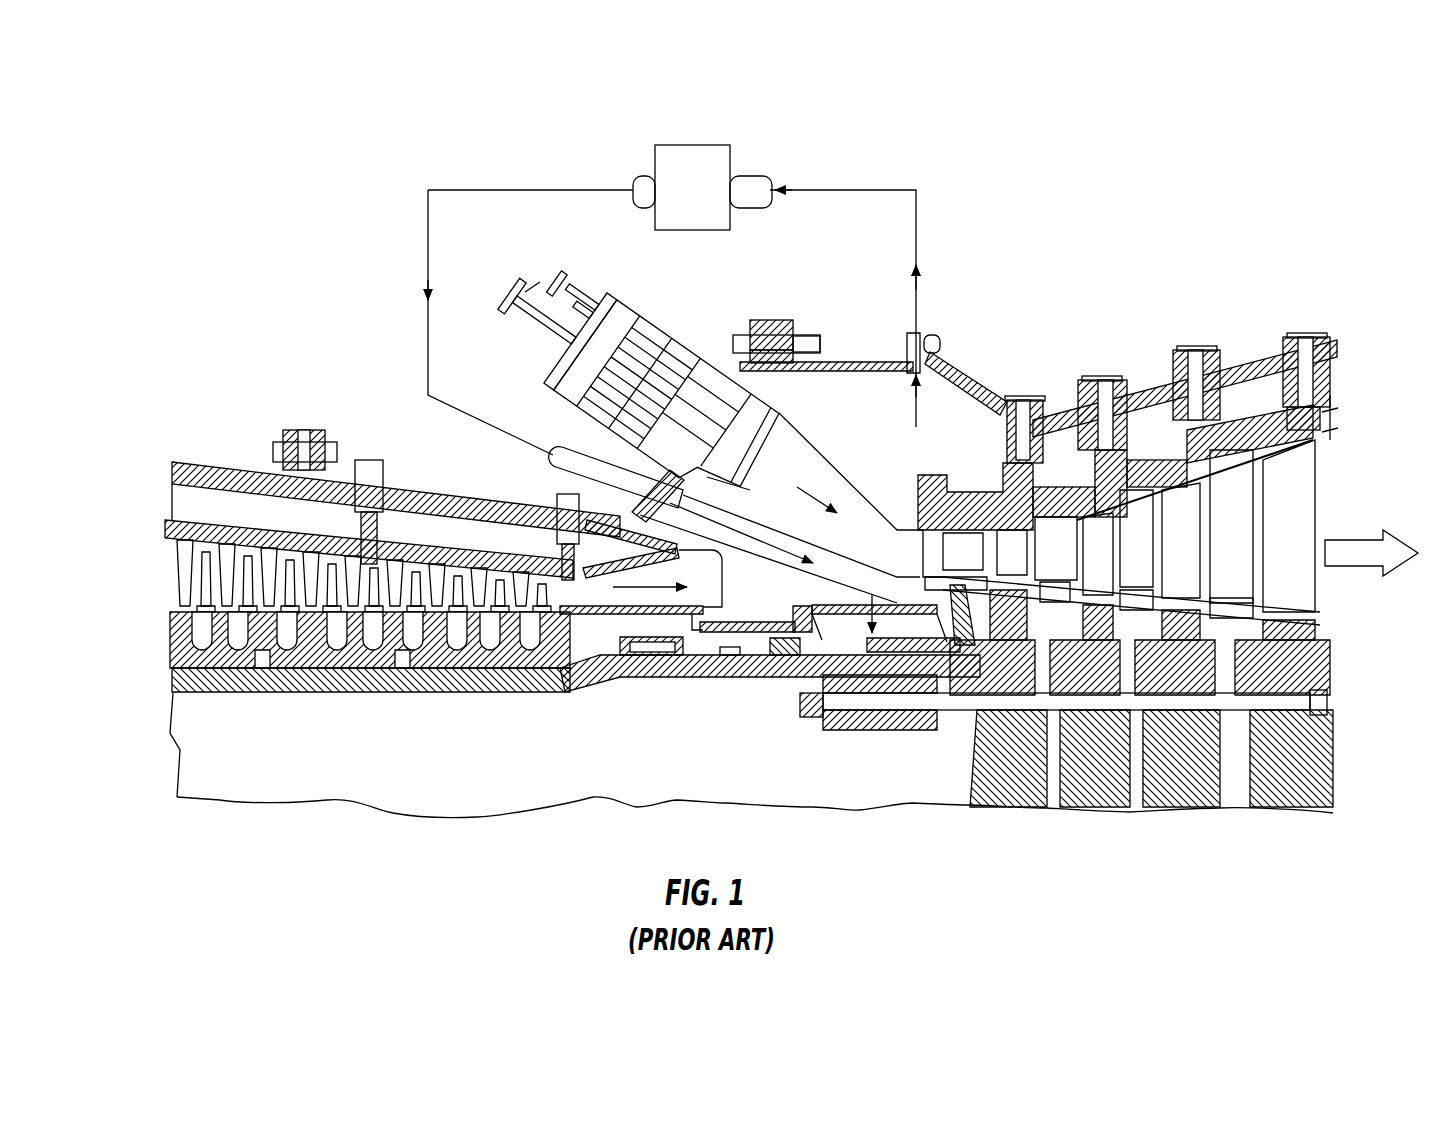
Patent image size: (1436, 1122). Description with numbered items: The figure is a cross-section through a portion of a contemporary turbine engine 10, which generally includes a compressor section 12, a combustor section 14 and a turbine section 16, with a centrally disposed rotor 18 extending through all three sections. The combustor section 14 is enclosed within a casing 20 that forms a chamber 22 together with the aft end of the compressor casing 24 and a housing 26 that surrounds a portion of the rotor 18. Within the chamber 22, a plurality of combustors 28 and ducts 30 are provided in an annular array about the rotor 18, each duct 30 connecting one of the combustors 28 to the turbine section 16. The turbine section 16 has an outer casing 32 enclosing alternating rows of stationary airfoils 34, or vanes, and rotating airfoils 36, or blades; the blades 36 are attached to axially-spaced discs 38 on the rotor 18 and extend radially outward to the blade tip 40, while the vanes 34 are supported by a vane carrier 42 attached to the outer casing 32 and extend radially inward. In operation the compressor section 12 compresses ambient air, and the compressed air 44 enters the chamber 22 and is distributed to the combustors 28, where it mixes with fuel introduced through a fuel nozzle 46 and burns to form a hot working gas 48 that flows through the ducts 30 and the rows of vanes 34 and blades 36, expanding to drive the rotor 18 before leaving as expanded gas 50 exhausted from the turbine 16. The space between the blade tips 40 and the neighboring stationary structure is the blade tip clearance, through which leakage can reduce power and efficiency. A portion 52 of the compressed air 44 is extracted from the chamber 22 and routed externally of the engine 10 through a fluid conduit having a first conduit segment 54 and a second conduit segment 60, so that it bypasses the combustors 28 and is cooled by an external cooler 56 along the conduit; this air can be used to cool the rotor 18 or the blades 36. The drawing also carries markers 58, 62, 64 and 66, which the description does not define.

The turbine engine 10 is at (315, 182).
The compressor section 12 is at (232, 412).
The combustor section 14 is at (770, 305).
The turbine section 16 is at (1215, 295).
The rotor 18 is at (762, 672).
The casing 20 is at (965, 360).
The chamber 22 is at (872, 416).
The compressor casing 24 is at (245, 548).
The housing 26 is at (840, 603).
The combustor 28 is at (690, 372).
The duct 30 is at (820, 478).
The outer casing 32 is at (1148, 372).
The stationary airfoils 34 is at (978, 562).
The rotating airfoils 36 is at (1026, 562).
The disc 38 is at (1095, 610).
The blade tip 40 is at (1087, 515).
The vane carrier 42 is at (993, 408).
The compressed air 44 is at (630, 588).
The fuel nozzle 46 is at (510, 292).
The hot working gas 48 is at (838, 512).
The expanded gas 50 is at (1355, 575).
The portion of compressed air 52 is at (922, 212).
The first conduit segment 54 is at (770, 188).
The external cooler 56 is at (733, 150).
The combustor compartment casing 58 is at (500, 435).
The second conduit segment 60 is at (640, 182).
The cooling air cavity 62 is at (878, 622).
The rotor 64 is at (848, 630).
The cooling air system 66 is at (500, 155).